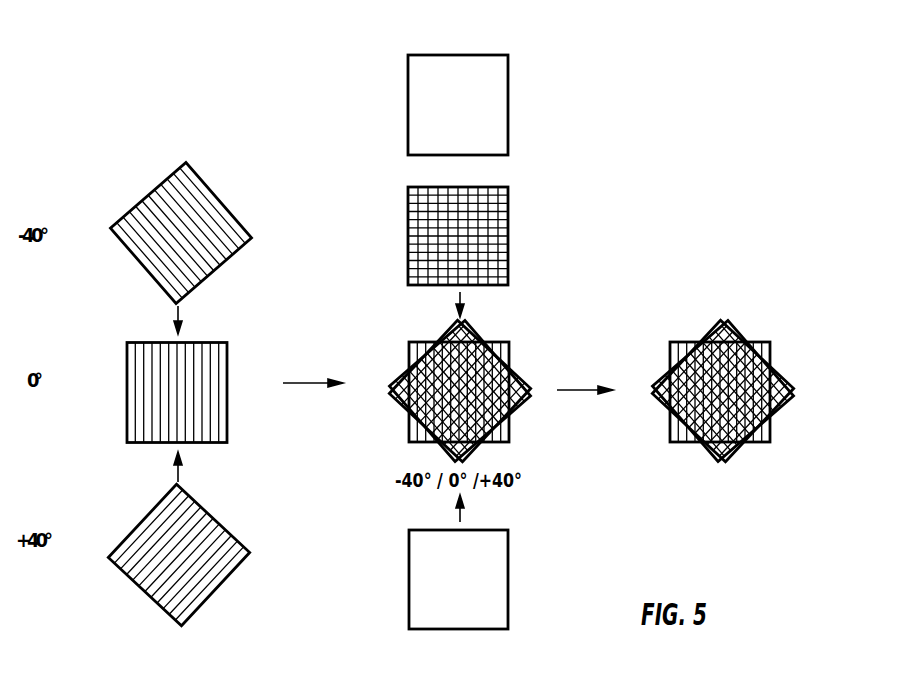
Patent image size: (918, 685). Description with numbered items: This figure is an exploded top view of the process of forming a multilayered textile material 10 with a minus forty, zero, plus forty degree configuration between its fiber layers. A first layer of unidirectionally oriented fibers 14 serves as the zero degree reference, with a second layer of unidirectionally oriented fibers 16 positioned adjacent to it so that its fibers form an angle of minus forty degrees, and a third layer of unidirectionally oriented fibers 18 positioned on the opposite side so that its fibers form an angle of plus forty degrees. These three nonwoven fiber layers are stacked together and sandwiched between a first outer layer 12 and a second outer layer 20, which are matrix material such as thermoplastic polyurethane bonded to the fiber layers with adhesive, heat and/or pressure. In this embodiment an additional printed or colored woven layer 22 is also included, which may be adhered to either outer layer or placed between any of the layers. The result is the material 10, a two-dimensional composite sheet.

The multilayered textile material 10 is at (769, 360).
The first outer layer 12 is at (508, 80).
The first layer of unidirectionally oriented fibers 14 is at (227, 362).
The second layer of unidirectionally oriented fibers 16 is at (218, 205).
The third layer of unidirectionally oriented fibers 18 is at (218, 527).
The second outer layer 20 is at (508, 565).
The printed or colored woven layer 22 is at (508, 212).